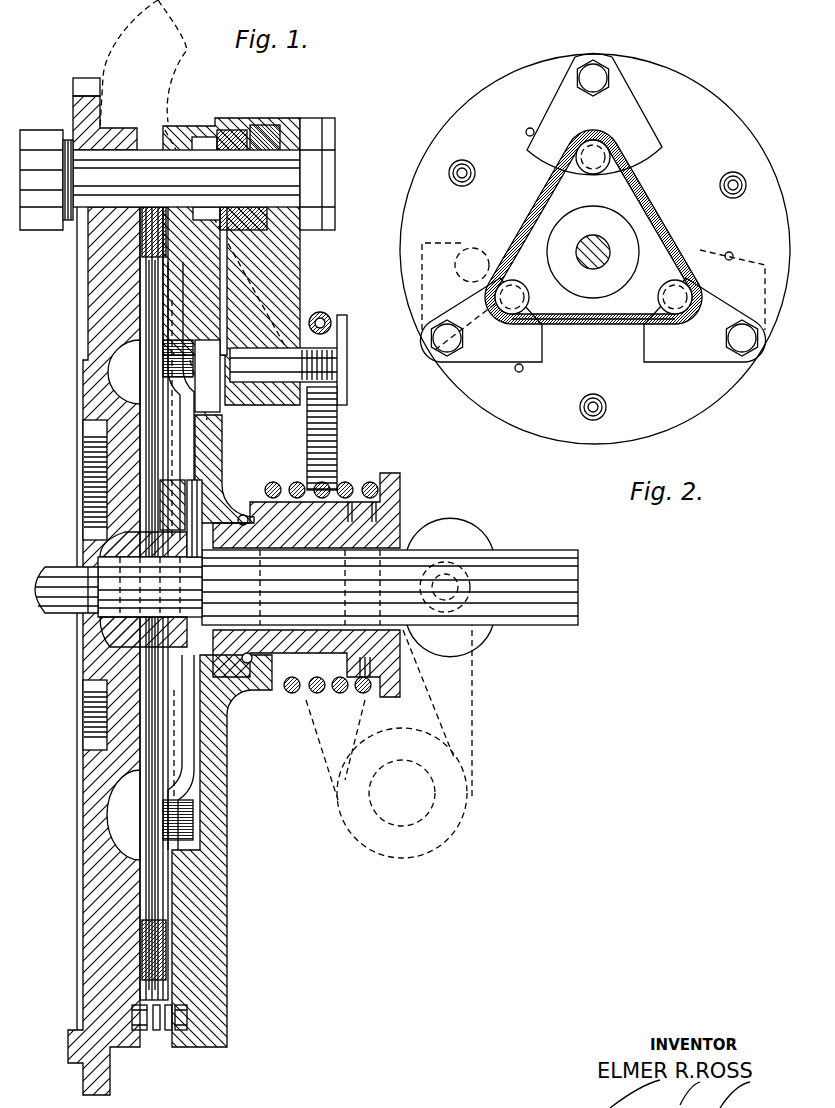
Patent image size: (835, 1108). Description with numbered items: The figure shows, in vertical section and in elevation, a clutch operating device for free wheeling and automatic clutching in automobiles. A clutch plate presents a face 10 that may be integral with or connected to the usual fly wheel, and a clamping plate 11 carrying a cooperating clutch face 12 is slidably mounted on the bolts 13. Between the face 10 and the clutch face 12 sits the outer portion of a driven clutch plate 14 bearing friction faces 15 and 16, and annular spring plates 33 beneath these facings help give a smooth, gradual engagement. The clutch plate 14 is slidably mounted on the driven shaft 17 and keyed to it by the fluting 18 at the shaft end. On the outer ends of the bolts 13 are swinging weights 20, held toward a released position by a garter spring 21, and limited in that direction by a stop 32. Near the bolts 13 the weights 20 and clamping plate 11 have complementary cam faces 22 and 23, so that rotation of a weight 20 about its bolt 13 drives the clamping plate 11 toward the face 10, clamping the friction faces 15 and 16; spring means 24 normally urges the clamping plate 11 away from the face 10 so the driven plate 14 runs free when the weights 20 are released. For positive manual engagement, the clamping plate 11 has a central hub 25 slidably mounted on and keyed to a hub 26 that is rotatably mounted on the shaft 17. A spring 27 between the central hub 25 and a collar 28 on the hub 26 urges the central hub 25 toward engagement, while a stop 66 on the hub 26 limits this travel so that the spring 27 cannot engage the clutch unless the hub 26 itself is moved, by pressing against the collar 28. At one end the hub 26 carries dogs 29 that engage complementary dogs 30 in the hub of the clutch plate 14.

In FIG. 1, the clutch face 10 is at (128, 212).
In FIG. 1, the clamping plate 11 is at (187, 133).
In FIG. 2, the clamping plate 11 is at (592, 433).
In FIG. 1, the clutch face 12 is at (152, 213).
In FIG. 1, the bolts 13 is at (322, 183).
In FIG. 2, the bolts 13 is at (600, 69).
In FIG. 1, the clutch plate 14 is at (187, 441).
In FIG. 1, the friction face 15 is at (148, 338).
In FIG. 1, the friction face 16 is at (207, 376).
In FIG. 1, the driven shaft 17 is at (390, 587).
In FIG. 2, the driven shaft 17 is at (592, 263).
In FIG. 1, the fluting 18 is at (95, 623).
In FIG. 1, the swinging weights 20 is at (290, 273).
In FIG. 2, the swinging weights 20 is at (568, 99).
In FIG. 1, the garter spring 21 is at (327, 317).
In FIG. 2, the garter spring 21 is at (555, 186).
In FIG. 1, the cam face 22 is at (236, 129).
In FIG. 1, the cam face 23 is at (262, 126).
In FIG. 1, the spring means 24 is at (347, 376).
In FIG. 2, the spring means 24 is at (473, 174).
In FIG. 1, the central hub 25 is at (225, 516).
In FIG. 1, the hub 26 is at (362, 691).
In FIG. 1, the spring 27 is at (348, 485).
In FIG. 1, the collar 28 is at (400, 491).
In FIG. 2, the collar 28 is at (588, 322).
In FIG. 1, the dogs 29 is at (246, 517).
In FIG. 1, the dogs 30 is at (190, 531).
In FIG. 2, the stop 32 is at (526, 132).
In FIG. 1, the annular spring plates 33 is at (160, 826).
In FIG. 1, the stop 66 is at (242, 660).